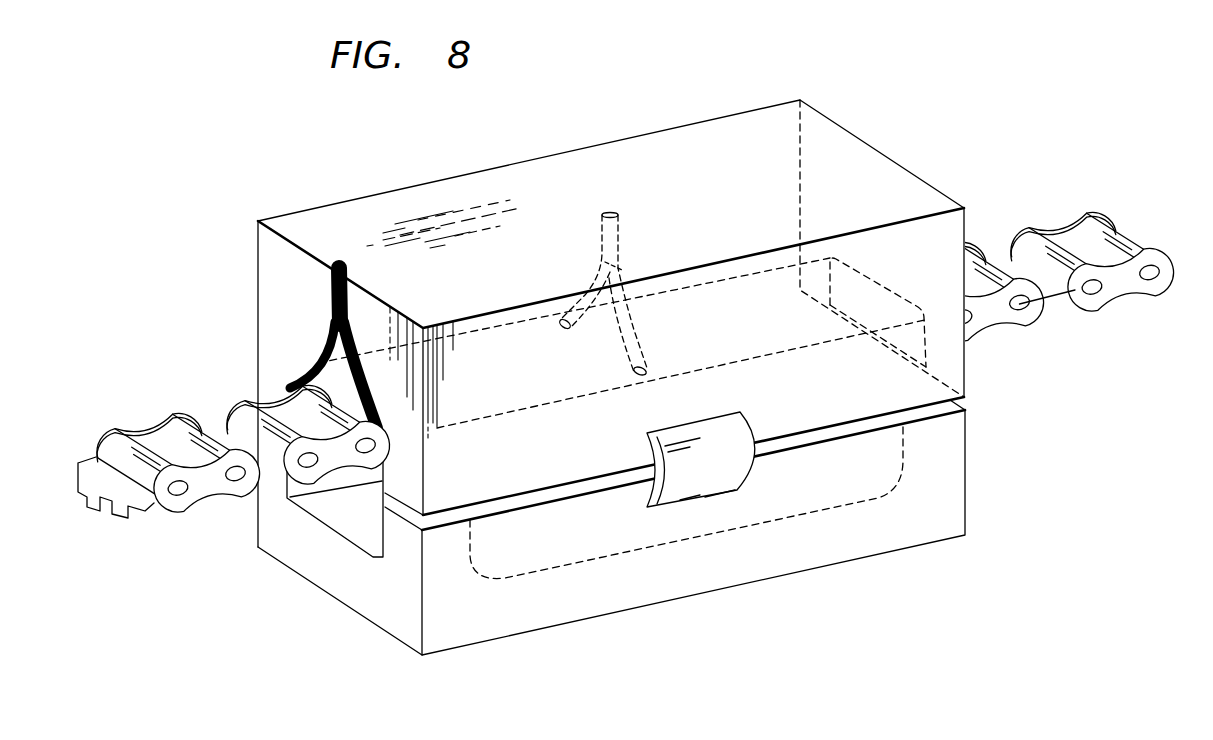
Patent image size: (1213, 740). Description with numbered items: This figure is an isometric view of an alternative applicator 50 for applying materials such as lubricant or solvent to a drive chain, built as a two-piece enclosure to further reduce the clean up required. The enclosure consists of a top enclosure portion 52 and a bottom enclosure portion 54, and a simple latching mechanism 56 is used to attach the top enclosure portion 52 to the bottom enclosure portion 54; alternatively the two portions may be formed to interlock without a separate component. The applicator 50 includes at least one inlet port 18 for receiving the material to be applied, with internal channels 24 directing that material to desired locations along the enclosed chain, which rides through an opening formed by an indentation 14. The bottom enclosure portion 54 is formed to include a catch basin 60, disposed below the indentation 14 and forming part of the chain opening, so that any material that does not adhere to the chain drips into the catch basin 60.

The applicator 50 is at (183, 202).
The top enclosure portion 52 is at (843, 143).
The bottom enclosure portion 54 is at (475, 628).
The latching mechanism 56 is at (745, 430).
The catch basin reservoir 60 is at (343, 513).
The inlet port 18 is at (608, 210).
The internal channels 24 is at (627, 250).
The indentation 14 is at (285, 390).